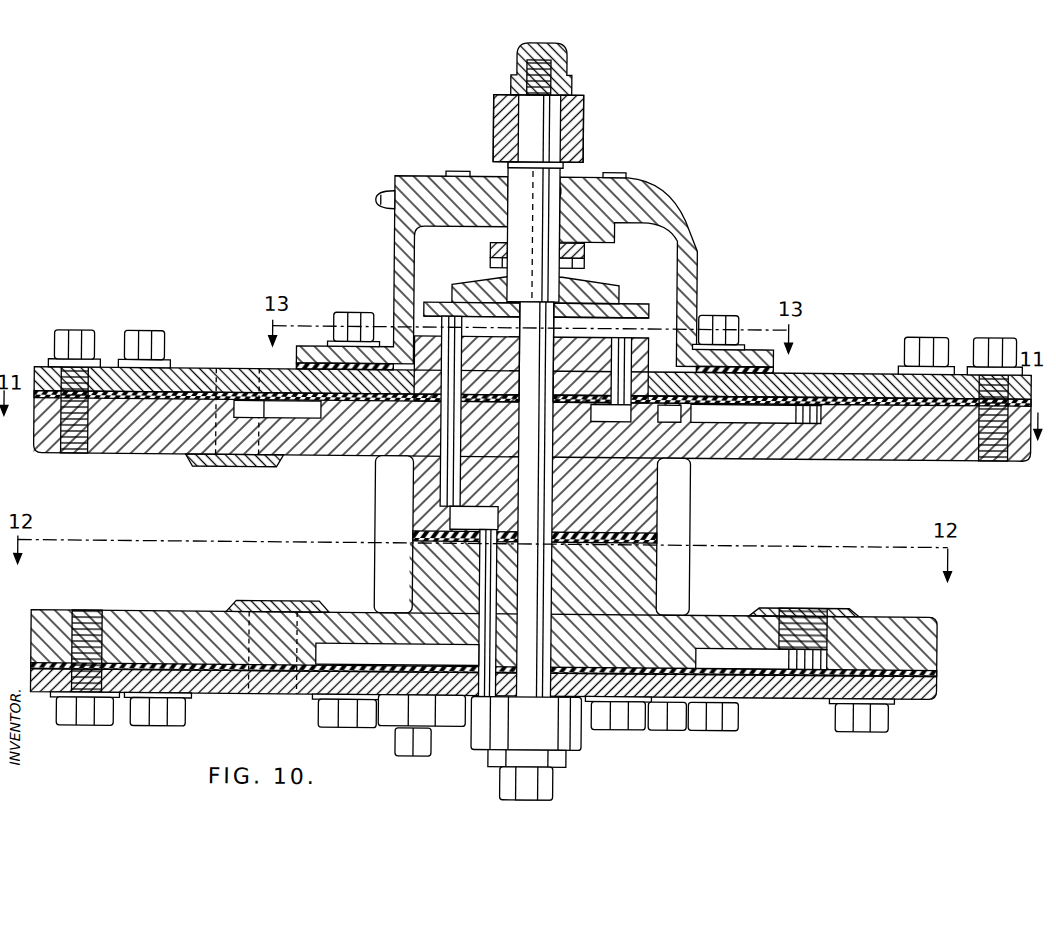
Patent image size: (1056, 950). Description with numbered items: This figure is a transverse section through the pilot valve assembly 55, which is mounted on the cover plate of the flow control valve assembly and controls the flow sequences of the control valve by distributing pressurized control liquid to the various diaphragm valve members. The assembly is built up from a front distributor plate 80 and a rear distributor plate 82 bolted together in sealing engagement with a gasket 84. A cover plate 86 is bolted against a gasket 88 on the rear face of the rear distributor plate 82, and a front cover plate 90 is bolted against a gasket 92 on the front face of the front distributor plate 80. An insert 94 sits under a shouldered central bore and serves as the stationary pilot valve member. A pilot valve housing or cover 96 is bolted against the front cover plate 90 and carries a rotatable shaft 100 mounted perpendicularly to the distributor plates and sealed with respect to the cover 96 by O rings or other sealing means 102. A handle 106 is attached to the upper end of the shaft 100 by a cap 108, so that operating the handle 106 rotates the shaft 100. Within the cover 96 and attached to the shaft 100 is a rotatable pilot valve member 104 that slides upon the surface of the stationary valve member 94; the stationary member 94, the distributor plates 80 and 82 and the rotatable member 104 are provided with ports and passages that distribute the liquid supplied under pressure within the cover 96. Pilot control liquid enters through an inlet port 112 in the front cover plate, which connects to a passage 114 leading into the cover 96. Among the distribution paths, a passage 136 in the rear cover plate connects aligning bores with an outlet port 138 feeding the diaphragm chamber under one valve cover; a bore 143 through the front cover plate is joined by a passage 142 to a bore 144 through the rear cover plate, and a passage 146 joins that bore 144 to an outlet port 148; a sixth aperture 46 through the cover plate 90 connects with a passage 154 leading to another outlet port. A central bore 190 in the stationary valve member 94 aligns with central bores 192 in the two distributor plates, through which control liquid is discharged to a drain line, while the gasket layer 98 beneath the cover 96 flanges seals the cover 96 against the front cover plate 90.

The pilot valve assembly 55 is at (240, 237).
The front distributor plate 80 is at (340, 460).
The rear distributor plate 82 is at (321, 612).
The gasket 84 is at (411, 537).
The cover plate 86 is at (255, 697).
The gasket 88 is at (290, 697).
The front cover plate 90 is at (212, 372).
The gasket 92 is at (250, 397).
The insert 94 is at (532, 527).
The pilot valve housing or cover 96 is at (665, 232).
The cover gasket 98 is at (776, 371).
The rotatable shaft 100 is at (520, 125).
The sealing means 102 is at (560, 192).
The rotatable pilot valve member 104 is at (617, 292).
The handle 106 is at (583, 125).
The cap 108 is at (567, 76).
The inlet port 112 is at (243, 471).
The passage 114 is at (319, 412).
The passage 136 is at (769, 660).
The outlet port 138 is at (808, 607).
The passage 142 is at (482, 513).
The bore 143 is at (459, 458).
The bore 144 is at (479, 600).
The passage 146 is at (434, 657).
The outlet port 148 is at (283, 607).
The passage 154 is at (770, 413).
The port 46 is at (666, 378).
The central bore 190 is at (536, 352).
The central bores 192 is at (553, 485).